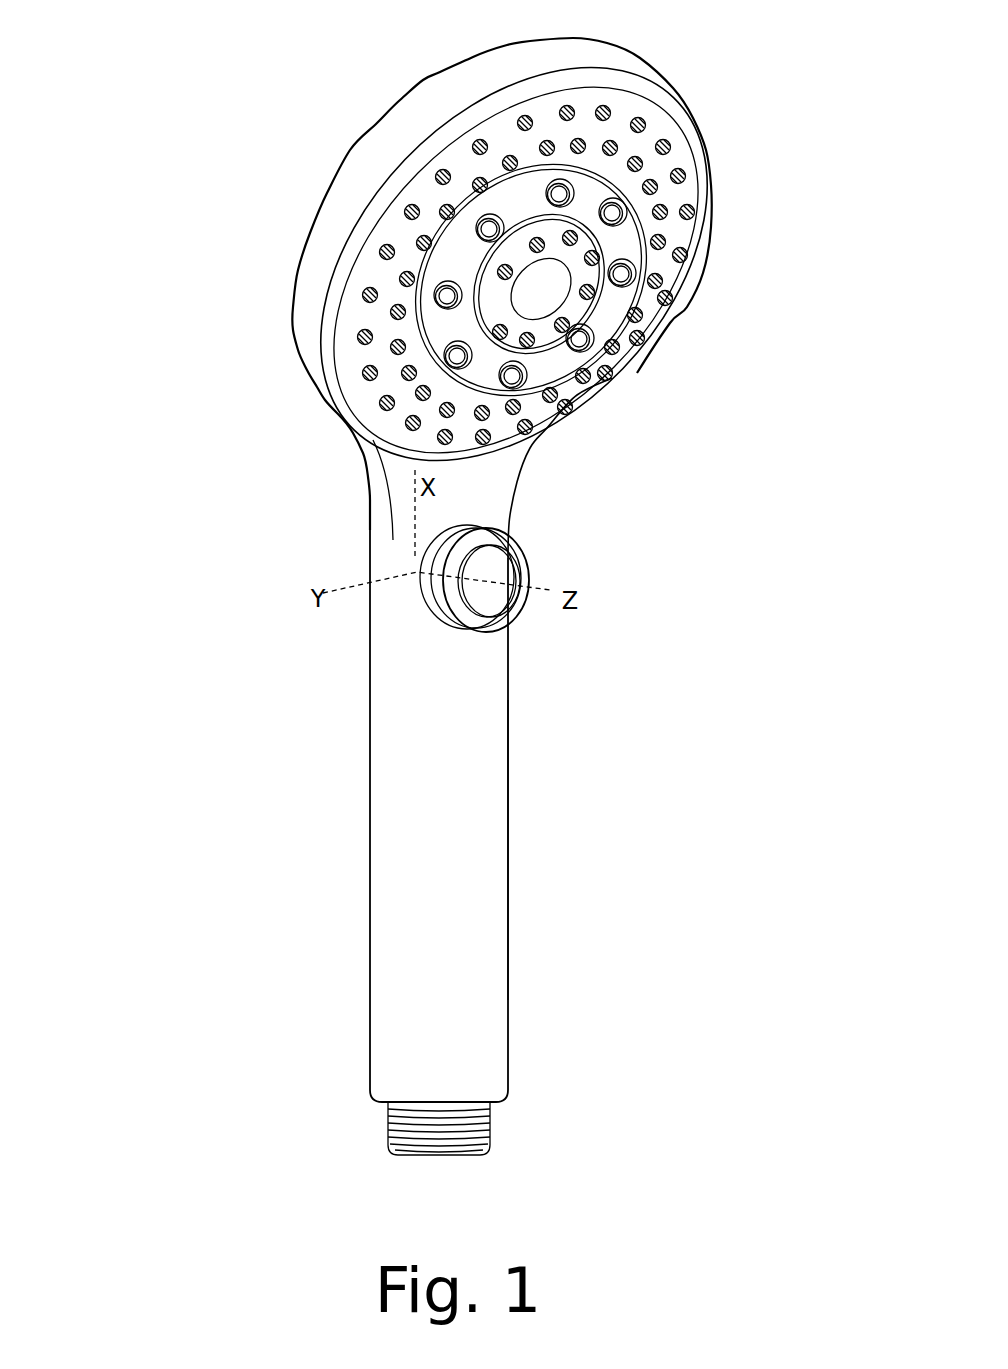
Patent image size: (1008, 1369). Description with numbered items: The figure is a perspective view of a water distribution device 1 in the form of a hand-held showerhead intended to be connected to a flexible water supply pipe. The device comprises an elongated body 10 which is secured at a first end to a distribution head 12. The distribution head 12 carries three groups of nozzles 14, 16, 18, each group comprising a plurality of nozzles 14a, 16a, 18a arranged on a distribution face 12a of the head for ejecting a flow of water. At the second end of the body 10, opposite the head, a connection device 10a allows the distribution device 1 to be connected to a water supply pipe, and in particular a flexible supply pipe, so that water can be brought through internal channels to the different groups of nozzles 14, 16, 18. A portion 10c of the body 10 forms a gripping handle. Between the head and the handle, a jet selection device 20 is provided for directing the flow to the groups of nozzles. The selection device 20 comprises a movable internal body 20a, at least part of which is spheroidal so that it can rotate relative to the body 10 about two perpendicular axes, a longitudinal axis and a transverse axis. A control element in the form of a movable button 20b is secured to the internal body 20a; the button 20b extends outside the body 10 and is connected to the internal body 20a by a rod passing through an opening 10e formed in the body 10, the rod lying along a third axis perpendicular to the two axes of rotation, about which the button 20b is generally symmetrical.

The water distribution device 1 is at (233, 473).
The body 10 is at (342, 880).
The connection device 10a is at (503, 1123).
The portion forming a gripping handle 10c is at (492, 903).
The opening 10e is at (425, 549).
The distribution head 12 is at (265, 262).
The distribution face 12a is at (372, 214).
The group of nozzles 14 is at (690, 162).
The nozzles 14a is at (652, 348).
The group of nozzles 16 is at (622, 245).
The nozzles 16a is at (480, 213).
The group of nozzles 18 is at (578, 312).
The nozzles 18a is at (565, 335).
The jet selection device 20 is at (518, 623).
The movable internal body 20a is at (437, 608).
The movable button 20b is at (505, 562).